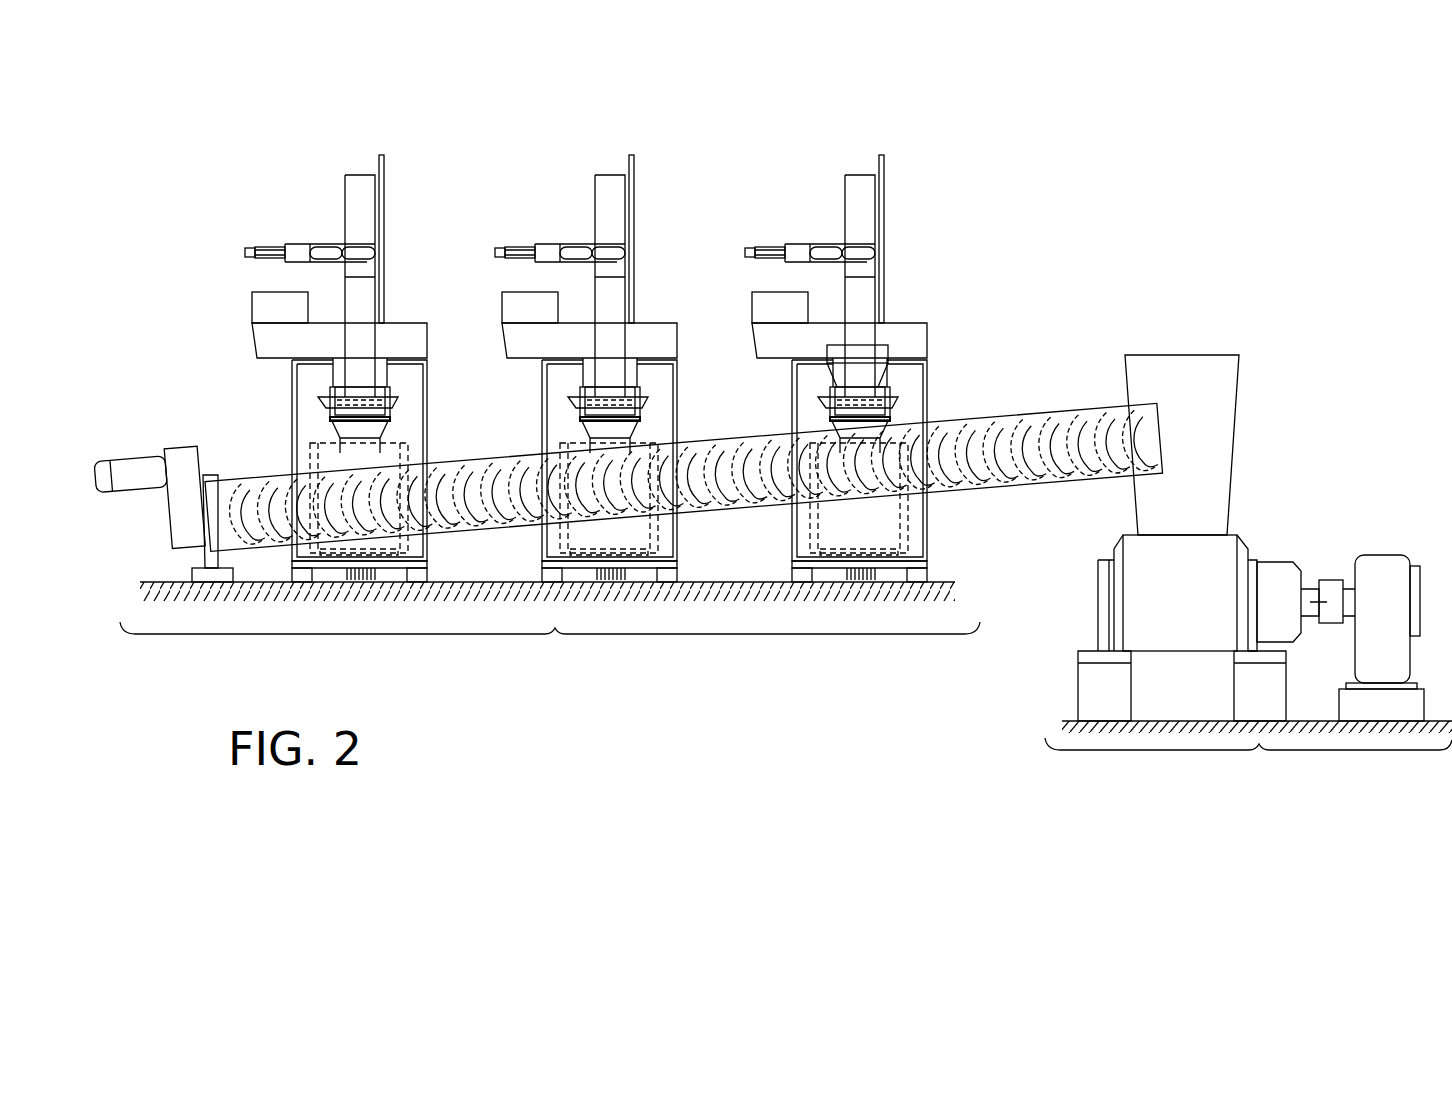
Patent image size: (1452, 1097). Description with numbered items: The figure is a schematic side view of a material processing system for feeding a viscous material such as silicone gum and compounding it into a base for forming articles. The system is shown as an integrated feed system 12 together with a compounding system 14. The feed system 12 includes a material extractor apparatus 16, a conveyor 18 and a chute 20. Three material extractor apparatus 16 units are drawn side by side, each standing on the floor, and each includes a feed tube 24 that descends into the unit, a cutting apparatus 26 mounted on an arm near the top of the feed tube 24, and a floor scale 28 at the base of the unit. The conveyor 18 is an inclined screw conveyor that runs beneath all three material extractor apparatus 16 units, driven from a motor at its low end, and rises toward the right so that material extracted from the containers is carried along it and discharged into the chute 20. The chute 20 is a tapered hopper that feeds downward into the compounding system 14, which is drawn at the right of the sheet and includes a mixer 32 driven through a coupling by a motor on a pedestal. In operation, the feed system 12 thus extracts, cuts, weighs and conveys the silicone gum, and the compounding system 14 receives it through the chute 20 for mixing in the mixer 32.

The feed system 12 is at (550, 648).
The compounding system 14 is at (1248, 763).
The material extractor apparatus (MEA) 16 is at (272, 402).
The conveyor 18 is at (1017, 410).
The chute 20 is at (1239, 386).
The feed tube 24 is at (377, 341).
The cutting apparatus 26 is at (297, 243).
The floor scale 28 is at (430, 567).
The mixer 32 is at (1250, 548).